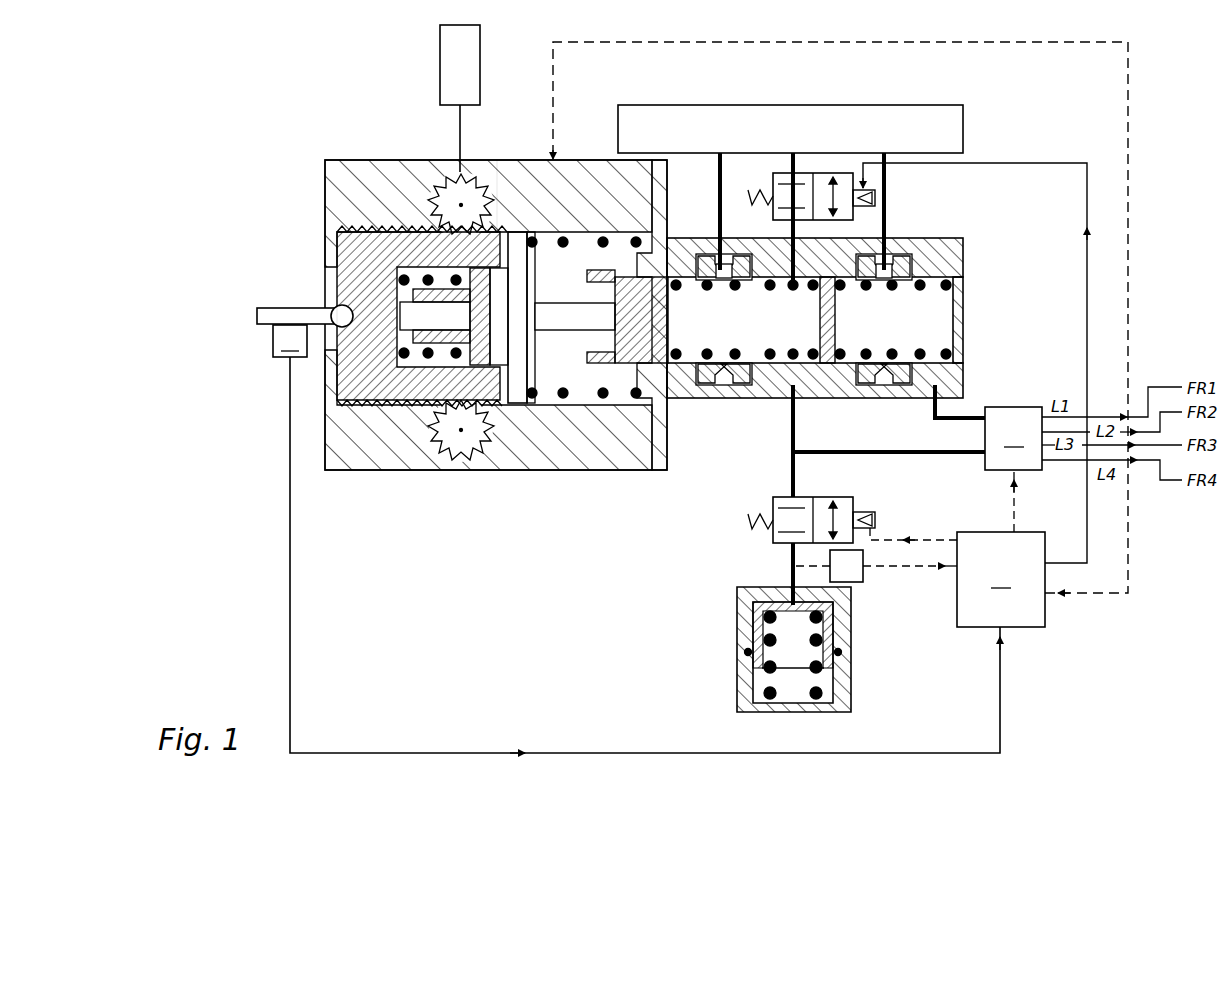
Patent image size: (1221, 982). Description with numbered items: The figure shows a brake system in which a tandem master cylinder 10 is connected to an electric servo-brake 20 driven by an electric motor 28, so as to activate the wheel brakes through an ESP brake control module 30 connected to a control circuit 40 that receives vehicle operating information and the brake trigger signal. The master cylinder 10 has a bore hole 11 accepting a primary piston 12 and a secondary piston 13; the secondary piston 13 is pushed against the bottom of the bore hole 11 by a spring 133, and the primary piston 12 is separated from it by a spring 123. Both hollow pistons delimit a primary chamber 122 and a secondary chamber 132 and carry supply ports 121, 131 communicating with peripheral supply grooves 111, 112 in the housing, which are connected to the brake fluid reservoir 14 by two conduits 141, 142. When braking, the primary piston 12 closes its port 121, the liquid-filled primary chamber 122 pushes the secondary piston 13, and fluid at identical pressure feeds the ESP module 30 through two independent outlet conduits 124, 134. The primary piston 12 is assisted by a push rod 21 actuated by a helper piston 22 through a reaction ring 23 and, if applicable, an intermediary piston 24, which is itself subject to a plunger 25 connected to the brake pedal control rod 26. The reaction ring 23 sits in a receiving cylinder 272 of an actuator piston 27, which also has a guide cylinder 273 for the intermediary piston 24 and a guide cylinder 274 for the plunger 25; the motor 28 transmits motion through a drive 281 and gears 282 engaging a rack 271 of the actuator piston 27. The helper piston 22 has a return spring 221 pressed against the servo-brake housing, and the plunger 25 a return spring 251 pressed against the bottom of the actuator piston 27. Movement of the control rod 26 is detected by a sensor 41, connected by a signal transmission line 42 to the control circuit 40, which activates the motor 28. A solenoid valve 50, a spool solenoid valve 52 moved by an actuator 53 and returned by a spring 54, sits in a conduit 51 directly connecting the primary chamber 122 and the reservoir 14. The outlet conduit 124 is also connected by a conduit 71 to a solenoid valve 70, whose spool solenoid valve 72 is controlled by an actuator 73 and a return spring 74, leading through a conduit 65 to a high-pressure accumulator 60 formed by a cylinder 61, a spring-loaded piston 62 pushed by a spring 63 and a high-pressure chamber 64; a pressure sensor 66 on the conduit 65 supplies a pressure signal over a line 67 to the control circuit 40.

The tandem master cylinder 10 is at (847, 301).
The bore hole 11 is at (955, 350).
The primary piston 12 is at (627, 316).
The secondary piston 13 is at (820, 313).
The brake fluid reservoir 14 is at (801, 140).
The electric servo-brake 20 is at (331, 150).
The push rod 21 is at (586, 322).
The helper piston 22 is at (528, 405).
The reaction ring 23 is at (493, 392).
The intermediary piston 24 is at (408, 318).
The plunger 25 is at (382, 352).
The brake pedal control rod 26 is at (258, 316).
The actuator piston 27 is at (375, 352).
The electric motor 28 is at (449, 57).
The ESP brake control module 30 is at (1013, 438).
The control circuit 40 is at (1001, 579).
The sensor 41 is at (290, 341).
The signal transmission line 42 is at (588, 752).
The solenoid valve 50 is at (804, 148).
The conduit 51 is at (797, 228).
The spool solenoid valve 52 is at (816, 171).
The actuator 53 is at (861, 188).
The spring 54 is at (760, 176).
The high-pressure accumulator 60 is at (809, 647).
The cylinder 61 is at (760, 677).
The piston 62 is at (752, 632).
The spring 63 is at (772, 699).
The high-pressure chamber 64 is at (765, 588).
The conduit 65 is at (790, 560).
The pressure sensor 66 is at (855, 582).
The line 67 is at (922, 562).
The solenoid valve 70 is at (801, 497).
The conduit 71 is at (790, 460).
The spool solenoid valve 72 is at (821, 497).
The actuator 73 is at (870, 510).
The return spring 74 is at (748, 516).
The peripheral supply groove 111 is at (737, 262).
The peripheral supply groove 112 is at (905, 260).
The supply port 121 is at (745, 290).
The primary chamber 122 is at (768, 328).
The spring 123 is at (737, 356).
The outlet conduit 124 is at (797, 430).
The supply port 131 is at (907, 282).
The secondary chamber 132 is at (884, 328).
The spring 133 is at (927, 368).
The outlet conduit 134 is at (948, 424).
The conduit 141 is at (718, 206).
The conduit 142 is at (888, 180).
The return spring 221 is at (563, 250).
The return spring 251 is at (396, 277).
The rack 271 is at (402, 222).
The receiving cylinder 272 is at (497, 232).
The guide cylinder 273 is at (458, 418).
The guide cylinder 274 is at (404, 382).
The drive 281 is at (458, 137).
The gears 282 is at (468, 186).